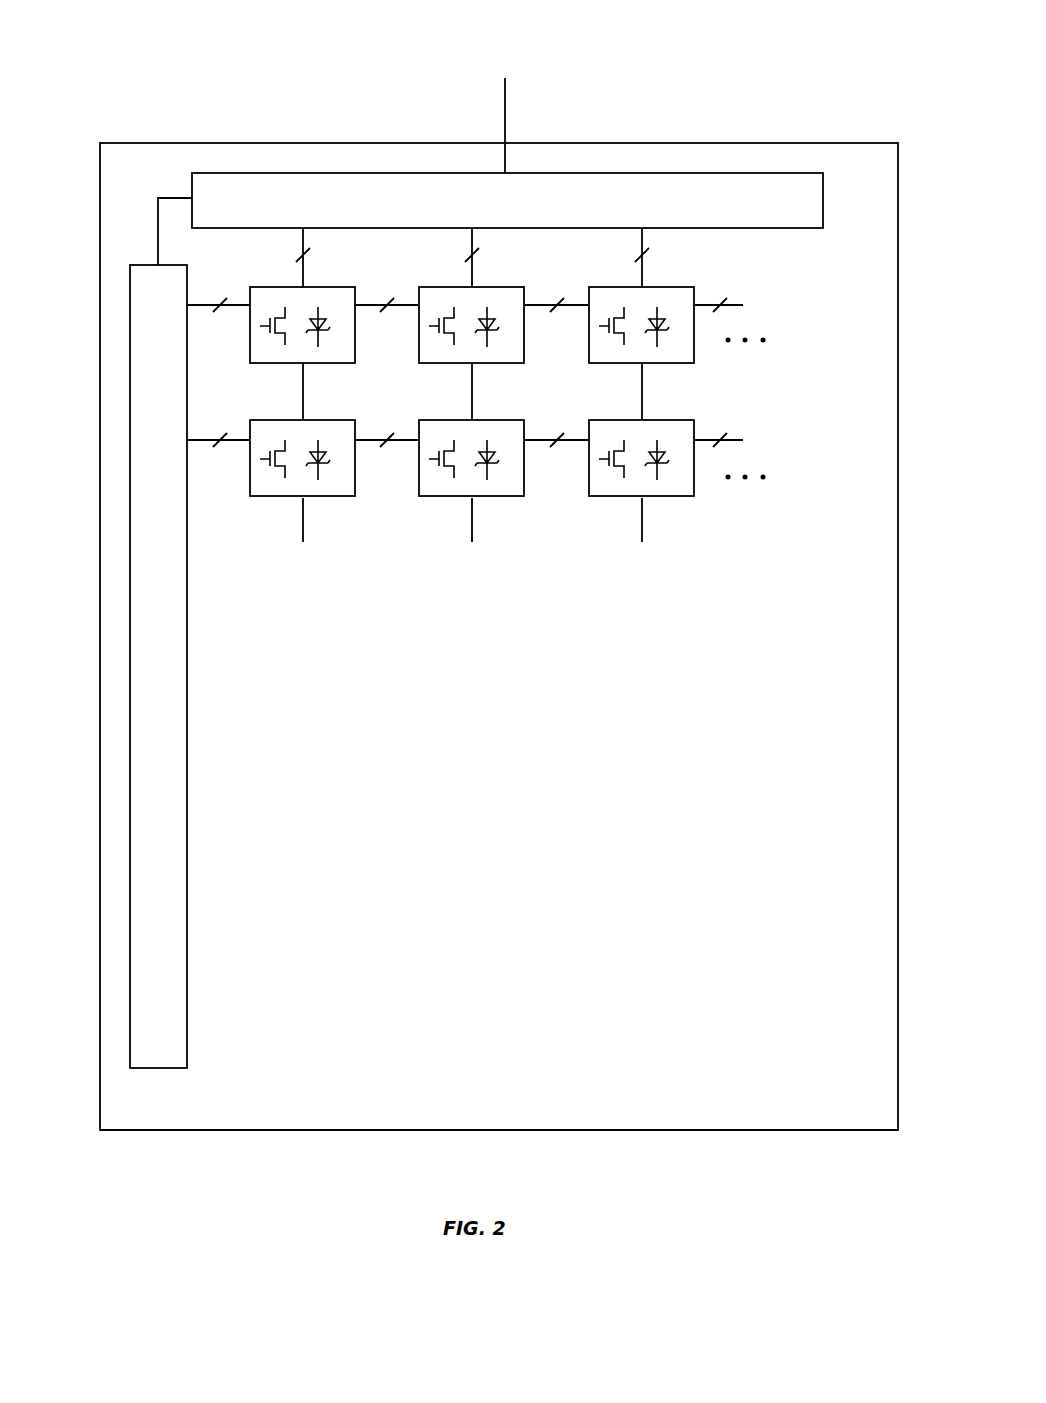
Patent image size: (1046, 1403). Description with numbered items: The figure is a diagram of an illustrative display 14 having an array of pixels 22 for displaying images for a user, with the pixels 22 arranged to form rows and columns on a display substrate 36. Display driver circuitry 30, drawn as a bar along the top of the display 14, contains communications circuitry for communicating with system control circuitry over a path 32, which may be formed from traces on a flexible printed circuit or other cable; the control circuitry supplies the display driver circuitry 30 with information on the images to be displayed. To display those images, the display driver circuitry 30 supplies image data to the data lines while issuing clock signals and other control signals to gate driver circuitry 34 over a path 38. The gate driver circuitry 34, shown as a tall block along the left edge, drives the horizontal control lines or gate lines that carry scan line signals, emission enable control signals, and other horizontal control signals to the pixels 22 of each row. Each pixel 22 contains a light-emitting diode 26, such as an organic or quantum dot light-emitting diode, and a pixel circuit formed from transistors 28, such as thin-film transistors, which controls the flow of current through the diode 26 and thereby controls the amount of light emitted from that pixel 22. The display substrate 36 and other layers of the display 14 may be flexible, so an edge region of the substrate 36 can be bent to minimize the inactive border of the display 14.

The display 14 is at (752, 63).
The pixel 22 is at (338, 499).
The light-emitting diode 26 is at (674, 470).
The transistors 28 is at (604, 470).
The display driver circuitry 30 is at (640, 172).
The path 32 is at (505, 98).
The gate driver circuitry 34 is at (158, 1069).
The display substrate 36 is at (320, 1131).
The path 38 is at (167, 196).